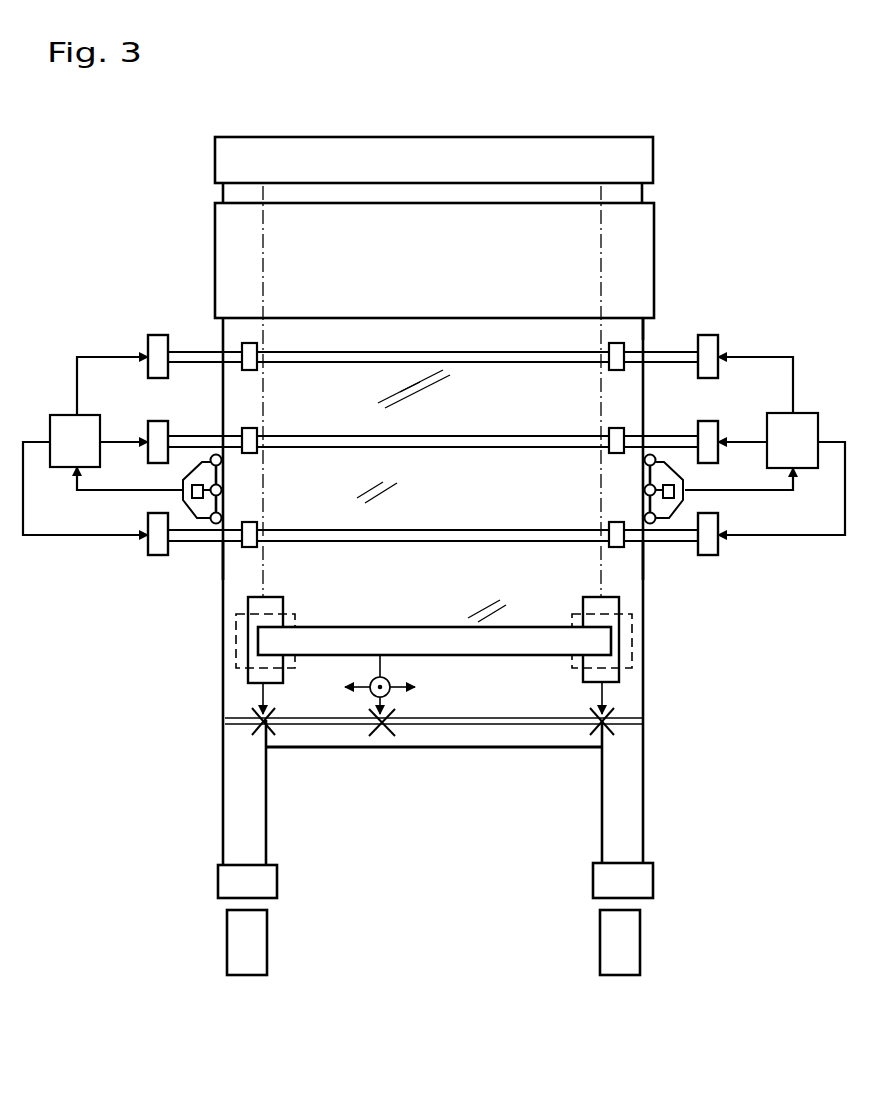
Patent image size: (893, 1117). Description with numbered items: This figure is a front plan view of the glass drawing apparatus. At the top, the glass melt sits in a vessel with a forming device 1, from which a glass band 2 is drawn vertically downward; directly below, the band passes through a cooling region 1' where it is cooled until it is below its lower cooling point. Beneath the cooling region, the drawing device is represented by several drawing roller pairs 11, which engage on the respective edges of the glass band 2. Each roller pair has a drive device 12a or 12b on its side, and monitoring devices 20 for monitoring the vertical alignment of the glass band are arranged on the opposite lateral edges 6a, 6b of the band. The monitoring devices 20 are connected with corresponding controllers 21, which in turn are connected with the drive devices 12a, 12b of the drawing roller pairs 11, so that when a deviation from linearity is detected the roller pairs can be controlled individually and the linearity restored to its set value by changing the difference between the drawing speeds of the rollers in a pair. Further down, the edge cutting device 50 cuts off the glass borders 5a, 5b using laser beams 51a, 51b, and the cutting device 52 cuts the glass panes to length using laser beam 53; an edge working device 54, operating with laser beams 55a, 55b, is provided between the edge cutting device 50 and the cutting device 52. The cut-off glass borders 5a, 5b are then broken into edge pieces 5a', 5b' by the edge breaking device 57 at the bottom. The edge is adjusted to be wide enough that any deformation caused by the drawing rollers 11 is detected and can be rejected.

The forming device 1 is at (484, 159).
The cooling region 1' is at (487, 256).
The glass band 2 is at (633, 337).
The drawing roller pairs 11 is at (250, 372).
The drive device 12a is at (148, 340).
The drive device 12b is at (718, 340).
The monitoring device 20 is at (228, 503).
The controller 21 is at (60, 415).
The lateral edge 6a is at (223, 557).
The lateral edge 6b is at (643, 557).
The edge cutting device 50 is at (240, 603).
The cutting device 52 is at (393, 627).
The laser beam 53 is at (388, 716).
The edge working device 54 is at (236, 635).
The glass border 5a is at (182, 763).
The glass border 5b is at (687, 762).
The laser beam 51a is at (252, 718).
The laser beam 51b is at (612, 718).
The laser beam 55a is at (250, 746).
The laser beam 55b is at (618, 746).
The edge breaking device 57 is at (218, 880).
The edge piece 5a' is at (182, 946).
The edge piece 5b' is at (691, 946).